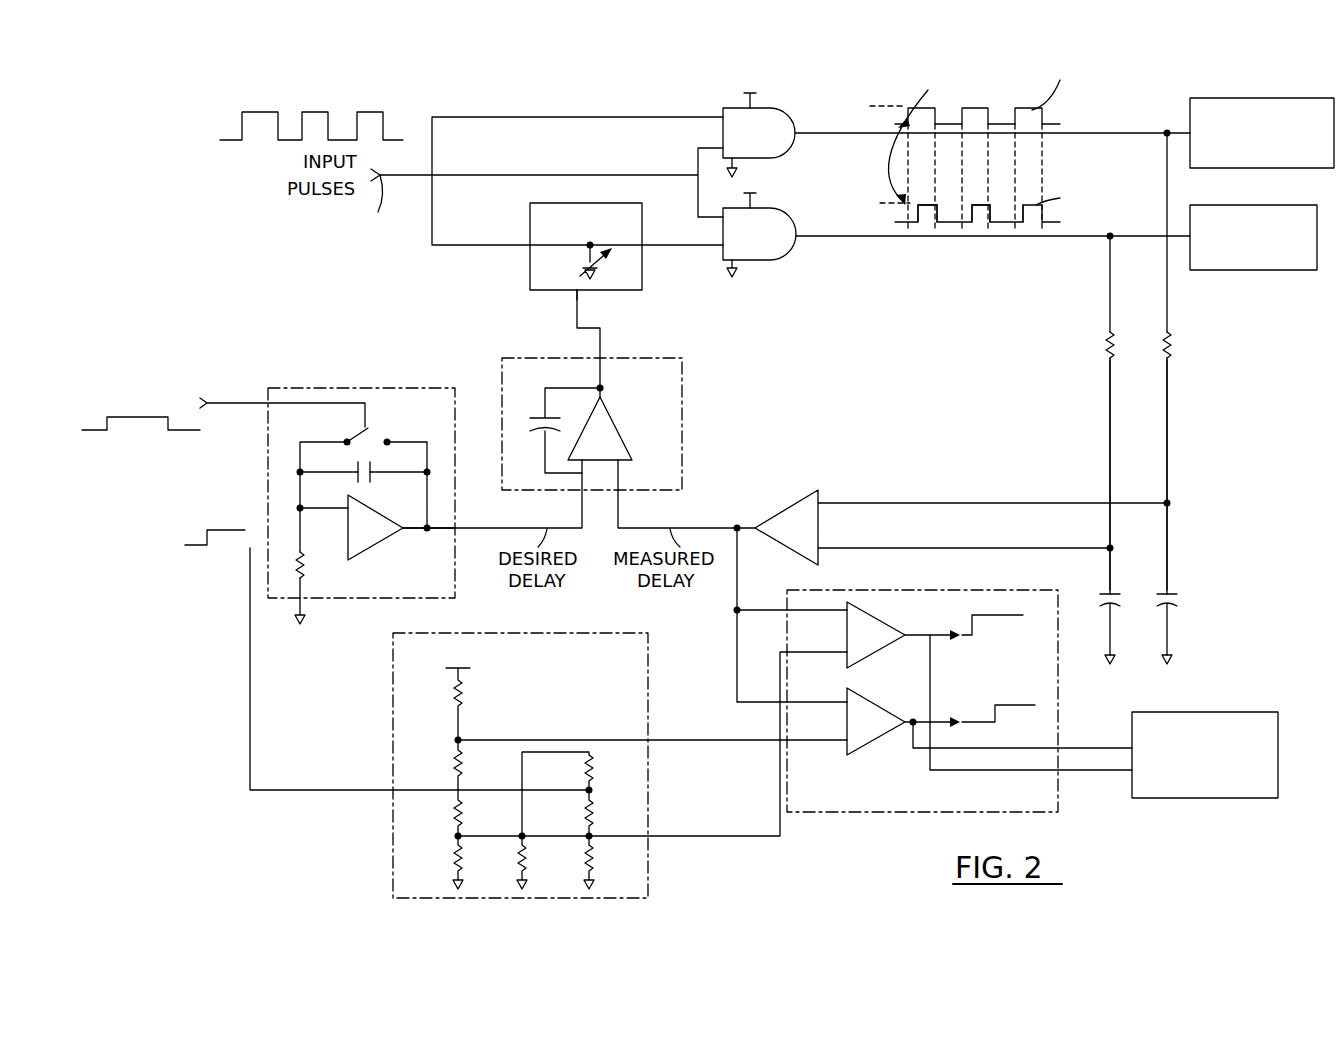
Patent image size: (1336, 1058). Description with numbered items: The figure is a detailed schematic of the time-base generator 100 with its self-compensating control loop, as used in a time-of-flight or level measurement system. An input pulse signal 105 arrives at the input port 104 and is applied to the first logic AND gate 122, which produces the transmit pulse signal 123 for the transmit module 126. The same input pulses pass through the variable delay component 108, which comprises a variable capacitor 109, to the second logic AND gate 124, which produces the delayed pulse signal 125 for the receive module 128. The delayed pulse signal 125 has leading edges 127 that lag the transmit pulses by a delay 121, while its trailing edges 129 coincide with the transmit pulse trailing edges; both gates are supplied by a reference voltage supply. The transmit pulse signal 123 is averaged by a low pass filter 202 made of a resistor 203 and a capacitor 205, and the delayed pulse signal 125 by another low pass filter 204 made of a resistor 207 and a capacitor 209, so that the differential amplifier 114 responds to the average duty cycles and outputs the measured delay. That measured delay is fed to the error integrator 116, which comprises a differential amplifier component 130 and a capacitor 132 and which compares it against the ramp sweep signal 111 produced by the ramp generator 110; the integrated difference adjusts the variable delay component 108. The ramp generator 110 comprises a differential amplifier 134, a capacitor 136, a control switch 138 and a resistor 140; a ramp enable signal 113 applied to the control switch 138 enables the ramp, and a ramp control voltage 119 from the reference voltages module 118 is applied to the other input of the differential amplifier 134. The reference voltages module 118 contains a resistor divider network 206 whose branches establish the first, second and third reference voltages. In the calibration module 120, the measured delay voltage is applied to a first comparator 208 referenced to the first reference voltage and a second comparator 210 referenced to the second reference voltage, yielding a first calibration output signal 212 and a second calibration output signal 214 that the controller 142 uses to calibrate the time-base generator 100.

The time-base generator 100 is at (1158, 63).
The input port 104 is at (389, 203).
The input pulse signal 105 is at (383, 112).
The variable delay component 108 is at (530, 268).
The variable capacitor 109 is at (613, 278).
The ramp generator 110 is at (430, 388).
The ramp sweep signal 111 is at (482, 520).
The ramp enable signal 113 is at (188, 430).
The amplifier 114 is at (790, 490).
The error integrator 116 is at (682, 405).
The reference voltages module 118 is at (648, 652).
The ramp control voltage 119 is at (218, 531).
The calibration module 120 is at (1030, 590).
The delay 121 is at (1008, 258).
The first logic AND gate 122 is at (735, 110).
The transmit pulse signal 123 is at (1050, 124).
The second logic AND gate 124 is at (720, 253).
The delayed pulse signal 125 is at (1060, 222).
The transmit module 126 is at (1265, 98).
The leading edges 127 is at (937, 222).
The receive module 128 is at (1255, 270).
The trailing edges 129 is at (975, 206).
The differential amplifier component 130 is at (612, 418).
The capacitor 132 is at (536, 414).
The differential amplifier 134 is at (382, 548).
The capacitor 136 is at (370, 460).
The control switch 138 is at (368, 430).
The resistor 140 is at (305, 565).
The controller 142 is at (1228, 712).
The low pass filter 202 is at (1200, 387).
The resistor 203 is at (1176, 345).
The low pass filter 204 is at (1099, 378).
The capacitor 205 is at (1175, 590).
The resistor divider network 206 is at (534, 701).
The resistor 207 is at (1102, 348).
The first comparator 208 is at (880, 618).
The capacitor 209 is at (1118, 590).
The second comparator 210 is at (880, 705).
The first calibration output signal 212 is at (995, 616).
The second calibration output signal 214 is at (1010, 706).